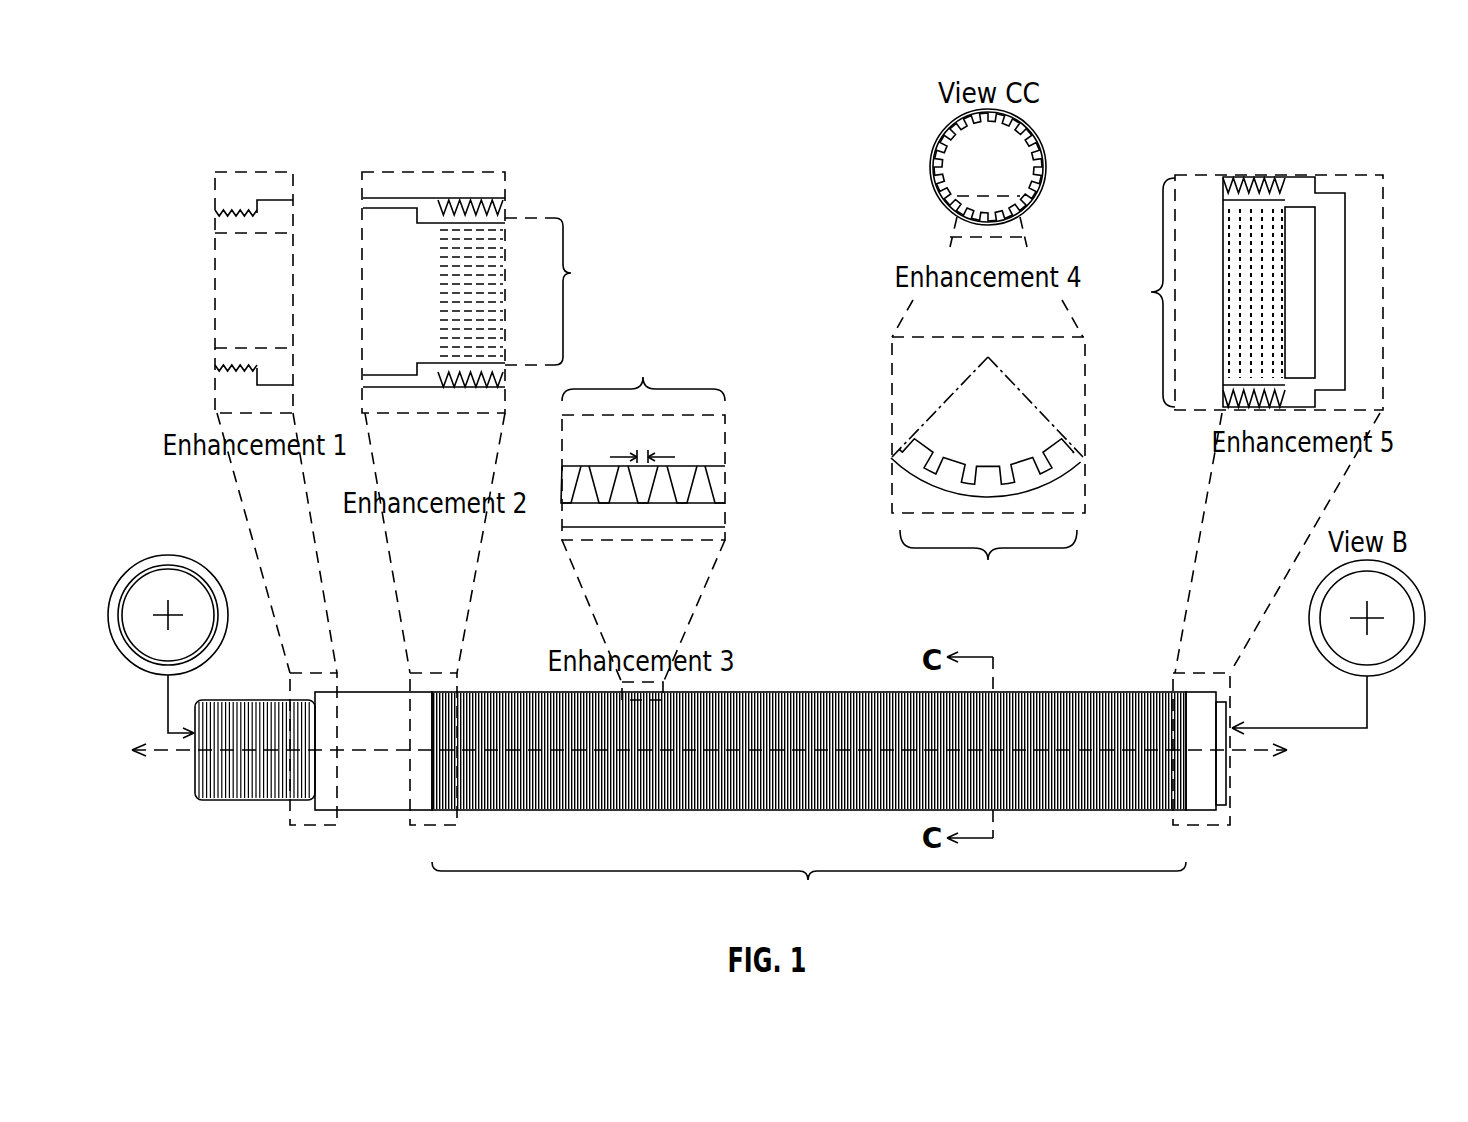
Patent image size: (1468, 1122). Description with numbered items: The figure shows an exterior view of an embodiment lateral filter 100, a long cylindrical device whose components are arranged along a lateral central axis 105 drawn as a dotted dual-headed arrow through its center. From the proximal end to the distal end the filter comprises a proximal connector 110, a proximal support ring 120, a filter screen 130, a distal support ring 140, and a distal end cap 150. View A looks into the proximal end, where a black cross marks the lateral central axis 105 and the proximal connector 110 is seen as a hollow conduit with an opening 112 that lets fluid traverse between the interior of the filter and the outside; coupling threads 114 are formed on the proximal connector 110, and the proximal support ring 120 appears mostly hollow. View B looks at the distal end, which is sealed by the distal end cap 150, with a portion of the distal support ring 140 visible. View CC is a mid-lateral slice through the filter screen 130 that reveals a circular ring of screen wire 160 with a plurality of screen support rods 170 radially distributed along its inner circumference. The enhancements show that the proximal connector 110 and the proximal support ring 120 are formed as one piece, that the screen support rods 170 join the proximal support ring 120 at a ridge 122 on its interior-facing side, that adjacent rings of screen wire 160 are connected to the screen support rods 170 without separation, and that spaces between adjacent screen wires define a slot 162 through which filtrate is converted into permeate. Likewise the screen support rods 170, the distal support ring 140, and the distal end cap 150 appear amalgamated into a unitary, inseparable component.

The lateral filter 100 is at (358, 904).
The lateral central axis 105 is at (167, 756).
The proximal connector 110 is at (250, 794).
The opening 112 is at (158, 664).
The coupling threads 114 is at (157, 571).
The proximal support ring 120 is at (360, 791).
The ridge 122 is at (423, 210).
The filter screen 130 is at (809, 799).
The distal support ring 140 is at (1202, 808).
The distal end cap 150 is at (1220, 797).
The screen wire 160 is at (868, 371).
The slot 162 is at (658, 455).
The screen support rods 170 is at (1032, 458).